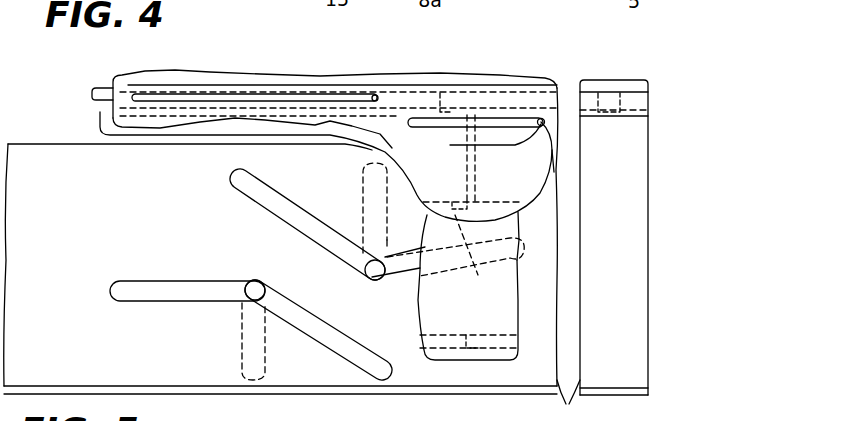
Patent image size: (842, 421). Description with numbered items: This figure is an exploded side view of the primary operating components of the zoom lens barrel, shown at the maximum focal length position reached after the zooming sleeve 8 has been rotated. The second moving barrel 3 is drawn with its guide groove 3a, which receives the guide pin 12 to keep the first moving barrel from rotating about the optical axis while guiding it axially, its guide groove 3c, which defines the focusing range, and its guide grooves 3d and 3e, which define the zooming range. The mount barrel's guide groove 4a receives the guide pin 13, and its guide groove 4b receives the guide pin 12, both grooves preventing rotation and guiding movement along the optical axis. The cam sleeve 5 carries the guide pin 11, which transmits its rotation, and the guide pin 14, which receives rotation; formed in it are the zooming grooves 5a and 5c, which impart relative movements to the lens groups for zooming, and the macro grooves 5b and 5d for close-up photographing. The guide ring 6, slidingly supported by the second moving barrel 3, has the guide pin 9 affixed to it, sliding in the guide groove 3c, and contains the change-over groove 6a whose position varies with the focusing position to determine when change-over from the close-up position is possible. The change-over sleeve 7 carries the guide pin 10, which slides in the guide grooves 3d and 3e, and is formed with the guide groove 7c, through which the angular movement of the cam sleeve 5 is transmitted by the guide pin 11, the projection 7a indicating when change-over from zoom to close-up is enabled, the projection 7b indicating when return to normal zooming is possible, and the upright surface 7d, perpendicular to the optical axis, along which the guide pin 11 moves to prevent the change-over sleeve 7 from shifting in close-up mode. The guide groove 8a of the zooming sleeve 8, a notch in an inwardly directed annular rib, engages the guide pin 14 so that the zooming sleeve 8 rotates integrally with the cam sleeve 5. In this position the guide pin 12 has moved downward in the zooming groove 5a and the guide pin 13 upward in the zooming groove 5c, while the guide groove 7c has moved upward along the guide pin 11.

The second moving barrel 3 is at (143, 77).
The guide groove 3a is at (362, 168).
The guide groove 3c is at (217, 88).
The guide groove 3d is at (550, 152).
The guide groove 3e is at (540, 118).
The guide groove 4a is at (242, 343).
The guide groove 4b is at (387, 248).
The cam sleeve 5 is at (292, 254).
The zooming groove 5a is at (395, 278).
The macro groove 5b is at (247, 200).
The zooming groove 5c is at (315, 312).
The macro groove 5d is at (150, 281).
The guide ring 6 is at (93, 94).
The change-over groove 6a is at (613, 92).
The change-over sleeve 7 is at (104, 124).
The projection 7a is at (440, 93).
The projection 7b is at (479, 270).
The guide groove 7c is at (478, 180).
The upright surface 7d is at (522, 234).
The zooming sleeve 8 is at (515, 290).
The guide groove 8a is at (470, 352).
The guide pin 9 is at (378, 93).
The guide pin 10 is at (544, 121).
The guide pin 11 is at (462, 200).
The guide pin 12 is at (370, 278).
The guide pin 13 is at (258, 280).
The guide pin 14 is at (469, 337).